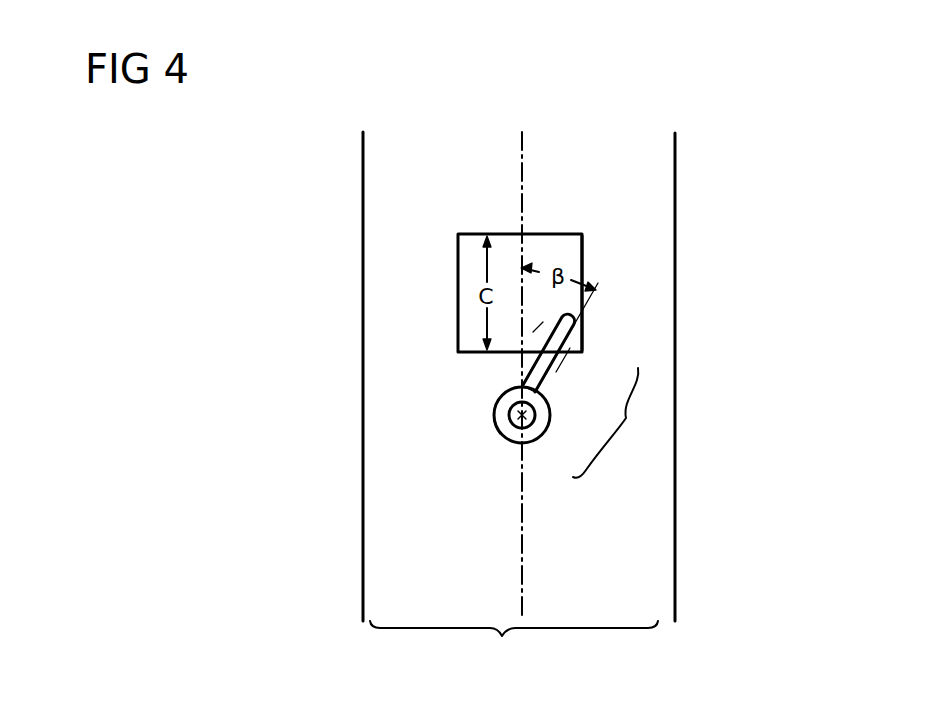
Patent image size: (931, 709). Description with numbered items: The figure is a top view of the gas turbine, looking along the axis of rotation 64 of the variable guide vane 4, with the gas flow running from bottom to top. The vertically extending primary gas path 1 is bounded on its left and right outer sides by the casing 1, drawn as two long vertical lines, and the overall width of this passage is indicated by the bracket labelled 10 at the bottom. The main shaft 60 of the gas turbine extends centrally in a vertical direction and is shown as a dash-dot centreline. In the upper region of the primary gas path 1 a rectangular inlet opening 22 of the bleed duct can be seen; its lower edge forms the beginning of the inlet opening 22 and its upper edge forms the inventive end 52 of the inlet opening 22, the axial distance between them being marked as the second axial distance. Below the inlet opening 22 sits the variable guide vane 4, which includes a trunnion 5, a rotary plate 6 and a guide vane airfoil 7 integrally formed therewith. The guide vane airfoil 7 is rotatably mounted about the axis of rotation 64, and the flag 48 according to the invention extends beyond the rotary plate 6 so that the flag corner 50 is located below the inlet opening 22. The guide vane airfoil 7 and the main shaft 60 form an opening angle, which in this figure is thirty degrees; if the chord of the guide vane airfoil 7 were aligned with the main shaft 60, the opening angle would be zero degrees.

The primary gas path / casing 1 is at (363, 198).
The main shaft 60 is at (522, 146).
The end of inlet opening 52 is at (582, 234).
The inlet opening 22 is at (582, 252).
The flag corner 50 is at (566, 338).
The guide vane airfoil 7 is at (560, 368).
The rotary plate 6 is at (535, 407).
The trunnion 5 is at (548, 432).
The variable guide vane 4 is at (626, 418).
The flag 48 is at (540, 362).
The axis of rotation 64 is at (497, 433).
The channel width 10 is at (514, 644).